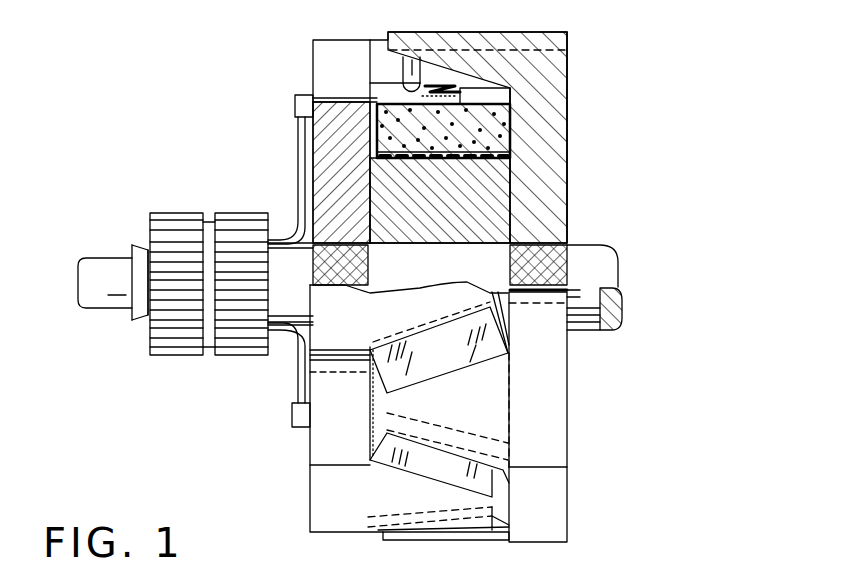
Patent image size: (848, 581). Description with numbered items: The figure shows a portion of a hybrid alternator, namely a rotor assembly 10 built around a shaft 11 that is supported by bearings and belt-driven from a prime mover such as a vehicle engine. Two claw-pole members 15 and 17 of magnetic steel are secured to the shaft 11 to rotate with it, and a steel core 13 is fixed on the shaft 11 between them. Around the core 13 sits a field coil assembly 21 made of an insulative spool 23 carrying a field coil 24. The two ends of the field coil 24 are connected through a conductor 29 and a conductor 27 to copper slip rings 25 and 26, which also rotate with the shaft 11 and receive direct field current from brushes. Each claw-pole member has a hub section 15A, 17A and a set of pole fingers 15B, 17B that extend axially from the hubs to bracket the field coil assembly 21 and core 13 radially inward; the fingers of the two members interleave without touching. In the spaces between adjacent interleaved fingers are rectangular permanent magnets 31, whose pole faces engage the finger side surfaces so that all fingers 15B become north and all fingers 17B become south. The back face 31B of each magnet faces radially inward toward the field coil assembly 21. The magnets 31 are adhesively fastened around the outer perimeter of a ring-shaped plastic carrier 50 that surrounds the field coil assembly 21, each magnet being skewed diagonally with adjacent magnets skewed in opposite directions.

The rotor assembly 10 is at (648, 313).
The shaft 11 is at (600, 262).
The core 13 is at (477, 212).
The claw pole member 15 is at (578, 109).
The hub section 15A is at (540, 198).
The pole fingers 15B is at (477, 65).
The claw pole member 17 is at (302, 61).
The hub section 17A is at (333, 162).
The pole fingers 17B is at (390, 313).
The field coil assembly 21 is at (477, 158).
The insulative spool 23 is at (500, 153).
The field coil 24 is at (505, 131).
The slip ring 25 is at (160, 222).
The slip ring 26 is at (233, 218).
The conductor 27 is at (297, 392).
The conductor 29 is at (300, 128).
The permanent magnet 31 is at (383, 64).
The back face 31B is at (422, 78).
The carrier 50 is at (460, 89).